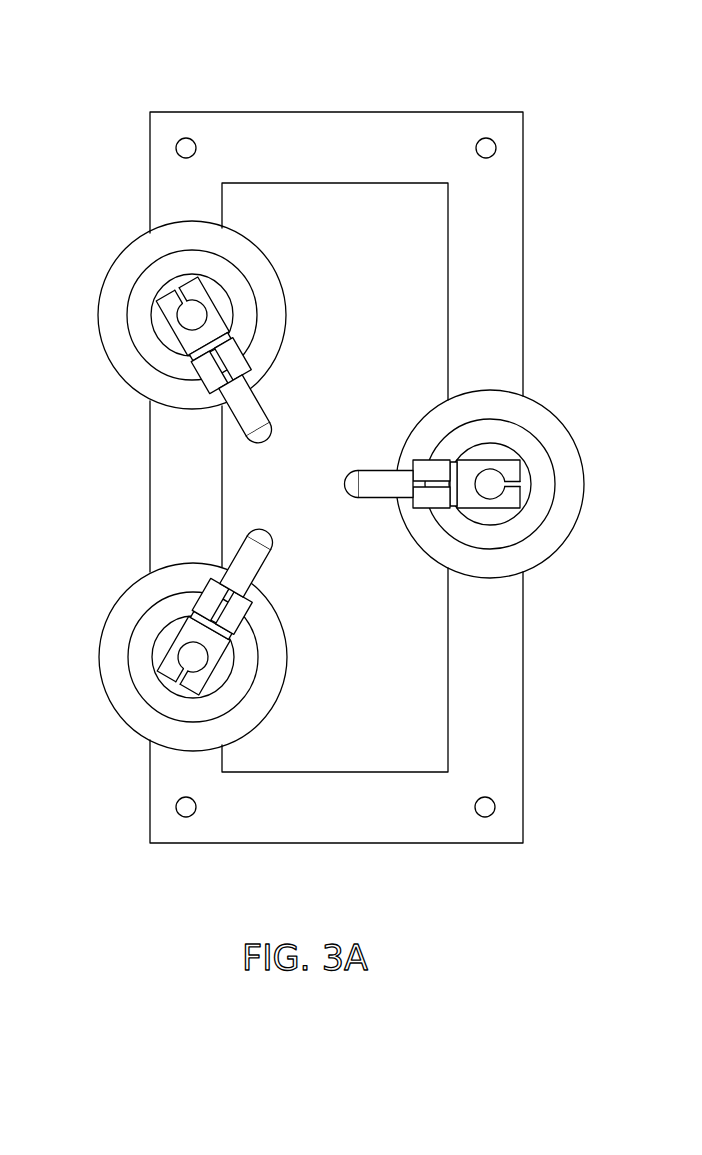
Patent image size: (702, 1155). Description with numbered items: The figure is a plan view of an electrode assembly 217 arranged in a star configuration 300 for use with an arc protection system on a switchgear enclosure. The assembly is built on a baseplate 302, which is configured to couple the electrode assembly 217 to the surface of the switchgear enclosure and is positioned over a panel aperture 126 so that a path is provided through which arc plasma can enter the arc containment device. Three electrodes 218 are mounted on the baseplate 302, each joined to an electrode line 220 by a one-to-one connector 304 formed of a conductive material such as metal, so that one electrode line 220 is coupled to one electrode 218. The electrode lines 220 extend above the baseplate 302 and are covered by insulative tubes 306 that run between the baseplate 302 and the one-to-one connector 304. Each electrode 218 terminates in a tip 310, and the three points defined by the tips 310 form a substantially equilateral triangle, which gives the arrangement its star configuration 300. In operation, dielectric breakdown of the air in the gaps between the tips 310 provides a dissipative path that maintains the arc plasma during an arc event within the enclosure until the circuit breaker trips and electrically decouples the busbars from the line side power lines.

The star configuration 300 is at (119, 59).
The baseplate 302 is at (297, 820).
The panel aperture 126 is at (325, 519).
The electrode assembly 217 is at (244, 491).
The insulative tube 306 is at (256, 327).
The one-to-one connector 304 is at (475, 503).
The electrode line 220 is at (190, 655).
The electrode 218 is at (363, 477).
The tip 310 is at (260, 443).